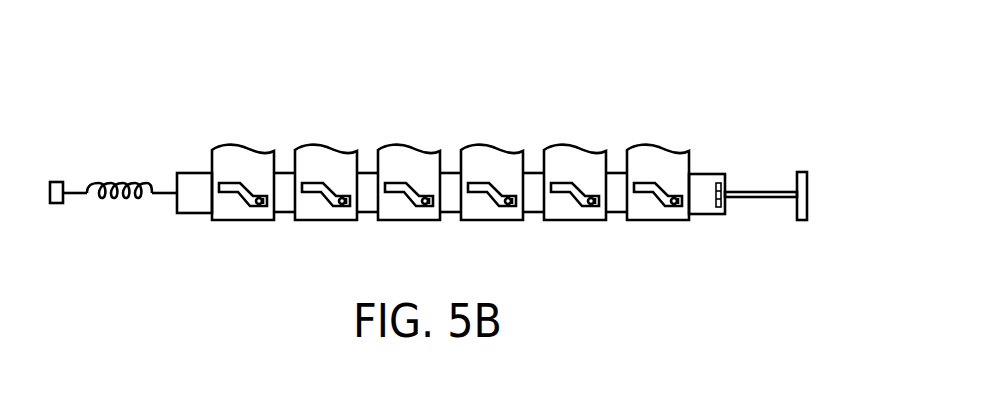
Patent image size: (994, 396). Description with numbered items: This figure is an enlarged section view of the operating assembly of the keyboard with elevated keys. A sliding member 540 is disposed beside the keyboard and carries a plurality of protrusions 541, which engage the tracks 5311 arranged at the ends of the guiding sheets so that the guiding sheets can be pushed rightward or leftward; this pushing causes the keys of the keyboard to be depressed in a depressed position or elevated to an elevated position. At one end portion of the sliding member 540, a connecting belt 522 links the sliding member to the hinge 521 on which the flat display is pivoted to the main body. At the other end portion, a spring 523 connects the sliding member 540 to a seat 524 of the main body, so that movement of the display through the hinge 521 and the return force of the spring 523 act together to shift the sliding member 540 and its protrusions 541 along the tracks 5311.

The hinge 521 is at (802, 171).
The connecting belt 522 is at (747, 191).
The spring 523 is at (133, 180).
The seat 524 is at (59, 180).
The sliding member 540 is at (708, 173).
The protrusion 541 is at (678, 197).
The track 5311 is at (658, 187).